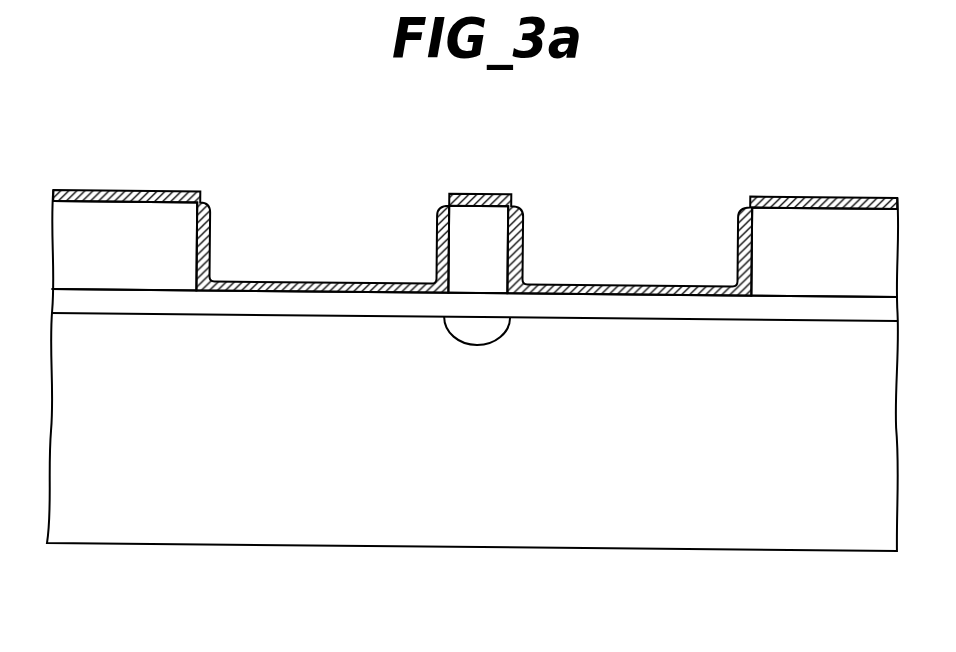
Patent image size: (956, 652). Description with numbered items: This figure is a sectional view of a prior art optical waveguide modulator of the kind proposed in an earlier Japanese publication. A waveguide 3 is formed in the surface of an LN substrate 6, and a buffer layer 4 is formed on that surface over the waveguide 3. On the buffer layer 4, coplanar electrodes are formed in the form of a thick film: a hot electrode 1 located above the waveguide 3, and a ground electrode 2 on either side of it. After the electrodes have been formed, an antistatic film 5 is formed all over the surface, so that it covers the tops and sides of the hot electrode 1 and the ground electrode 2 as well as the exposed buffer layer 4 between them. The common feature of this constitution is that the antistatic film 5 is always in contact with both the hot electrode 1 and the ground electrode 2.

The hot electrode 1 is at (472, 221).
The ground electrode 2 is at (134, 221).
The waveguide 3 is at (485, 329).
The buffer layer 4 is at (818, 305).
The antistatic film 5 is at (620, 280).
The LN substrate 6 is at (114, 379).